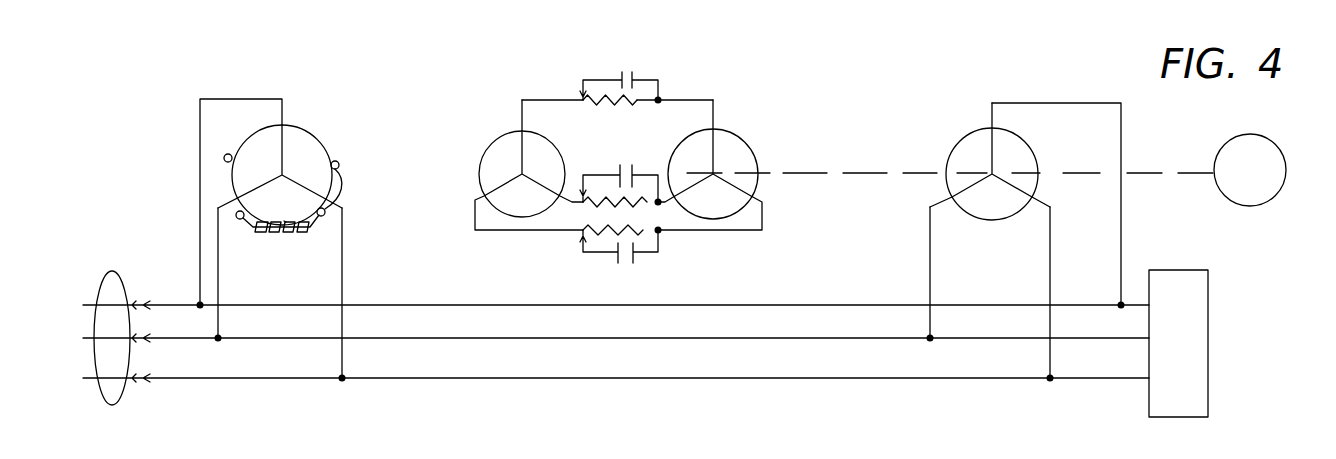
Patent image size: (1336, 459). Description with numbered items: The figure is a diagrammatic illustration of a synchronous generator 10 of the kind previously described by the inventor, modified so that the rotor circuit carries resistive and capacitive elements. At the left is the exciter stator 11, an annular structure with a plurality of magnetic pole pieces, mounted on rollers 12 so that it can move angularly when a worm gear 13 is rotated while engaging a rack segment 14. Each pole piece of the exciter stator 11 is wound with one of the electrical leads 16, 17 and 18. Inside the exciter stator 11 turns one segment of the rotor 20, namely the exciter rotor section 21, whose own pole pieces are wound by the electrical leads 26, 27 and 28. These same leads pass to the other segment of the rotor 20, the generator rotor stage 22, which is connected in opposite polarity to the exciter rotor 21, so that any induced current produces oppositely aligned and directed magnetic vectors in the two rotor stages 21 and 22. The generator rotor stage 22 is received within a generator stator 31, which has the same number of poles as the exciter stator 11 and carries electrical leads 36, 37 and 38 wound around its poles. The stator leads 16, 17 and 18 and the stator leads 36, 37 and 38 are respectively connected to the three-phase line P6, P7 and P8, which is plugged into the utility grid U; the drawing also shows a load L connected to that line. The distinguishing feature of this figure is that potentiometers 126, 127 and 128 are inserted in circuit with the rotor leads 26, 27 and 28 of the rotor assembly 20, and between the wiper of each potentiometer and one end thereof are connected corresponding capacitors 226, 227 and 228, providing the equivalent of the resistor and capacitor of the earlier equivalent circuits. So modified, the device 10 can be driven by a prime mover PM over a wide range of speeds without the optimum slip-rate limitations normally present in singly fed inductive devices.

The synchronous generator 10 is at (815, 86).
The exciter stator 11 is at (318, 138).
The rollers 12 is at (228, 154).
The worm gear 13 is at (288, 234).
The rack segment 14 is at (285, 220).
The electrical lead 16 is at (200, 133).
The electrical lead 17 is at (218, 273).
The electrical lead 18 is at (342, 258).
The rotor 20 is at (695, 96).
The exciter rotor section 21 is at (506, 133).
The generator rotor stage 22 is at (735, 138).
The electrical lead 26 is at (561, 97).
The electrical lead 27 is at (565, 195).
The electrical lead 28 is at (733, 233).
The potentiometer 126 is at (632, 104).
The potentiometer 127 is at (632, 205).
The potentiometer 128 is at (648, 229).
The capacitor 226 is at (636, 71).
The capacitor 227 is at (645, 158).
The capacitor 228 is at (645, 258).
The generator stator 31 is at (971, 134).
The electrical lead 36 is at (1122, 150).
The electrical lead 37 is at (930, 255).
The electrical lead 38 is at (1050, 267).
The prime mover PM is at (1277, 146).
The load L is at (1208, 347).
The utility grid U is at (118, 266).
The three-phase line P6 is at (461, 302).
The three-phase line P7 is at (500, 336).
The three-phase line P8 is at (533, 376).